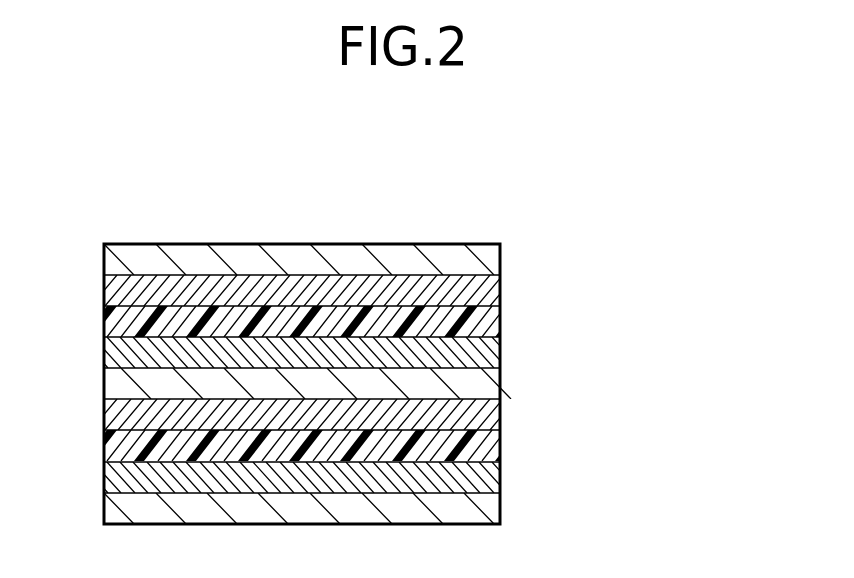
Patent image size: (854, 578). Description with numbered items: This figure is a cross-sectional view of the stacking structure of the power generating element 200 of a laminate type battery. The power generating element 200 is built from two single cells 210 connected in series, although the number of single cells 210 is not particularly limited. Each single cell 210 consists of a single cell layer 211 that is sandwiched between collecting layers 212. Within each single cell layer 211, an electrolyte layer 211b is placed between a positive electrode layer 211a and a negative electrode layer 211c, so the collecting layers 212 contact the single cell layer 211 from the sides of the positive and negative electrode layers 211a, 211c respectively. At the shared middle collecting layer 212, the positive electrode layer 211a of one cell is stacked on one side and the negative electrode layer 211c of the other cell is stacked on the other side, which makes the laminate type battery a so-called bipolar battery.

The power generating element 200 is at (128, 236).
The single cell 210 is at (716, 530).
The single cell layer 211 is at (618, 273).
The positive electrode layer 211a is at (502, 290).
The electrolyte layer 211b is at (502, 321).
The negative electrode layer 211c is at (502, 352).
The collecting layer 212 is at (502, 250).